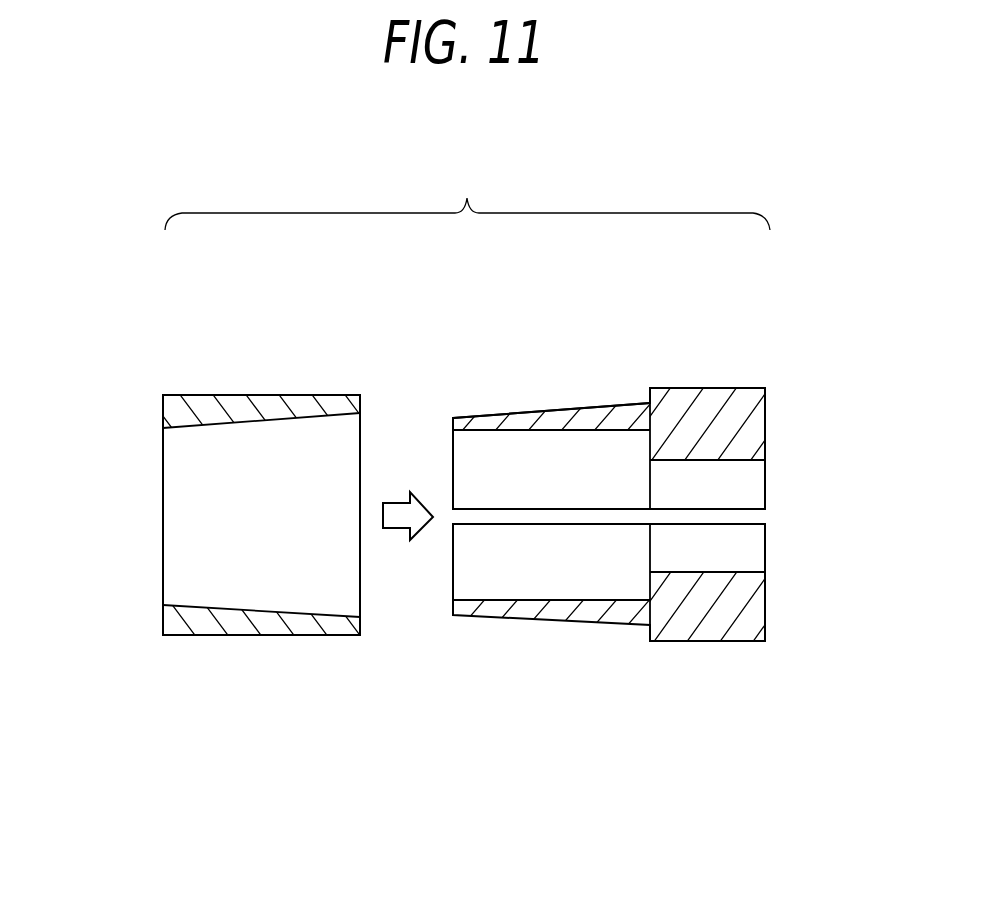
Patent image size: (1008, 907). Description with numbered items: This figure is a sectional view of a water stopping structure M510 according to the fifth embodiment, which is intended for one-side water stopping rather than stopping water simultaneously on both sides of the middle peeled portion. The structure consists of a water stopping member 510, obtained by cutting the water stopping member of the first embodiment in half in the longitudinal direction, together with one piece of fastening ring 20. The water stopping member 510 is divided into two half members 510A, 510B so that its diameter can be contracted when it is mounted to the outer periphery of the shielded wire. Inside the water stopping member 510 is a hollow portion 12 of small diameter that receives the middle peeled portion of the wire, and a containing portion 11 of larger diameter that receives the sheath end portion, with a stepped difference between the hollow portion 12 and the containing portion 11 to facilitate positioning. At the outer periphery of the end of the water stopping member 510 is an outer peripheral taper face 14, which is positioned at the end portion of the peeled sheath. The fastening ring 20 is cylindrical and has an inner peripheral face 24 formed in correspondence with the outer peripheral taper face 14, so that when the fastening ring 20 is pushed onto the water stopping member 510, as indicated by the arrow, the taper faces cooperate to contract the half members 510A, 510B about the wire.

The water stopping structure M510 is at (467, 194).
The fastening ring 20 is at (284, 476).
The inner peripheral face 24 is at (230, 424).
The outer peripheral taper face 14 is at (533, 412).
The containing portion 11 is at (588, 430).
The water stopping member 510 is at (680, 524).
The half member 510A is at (651, 410).
The half member 510B is at (761, 656).
The hollow portion 12 is at (725, 461).